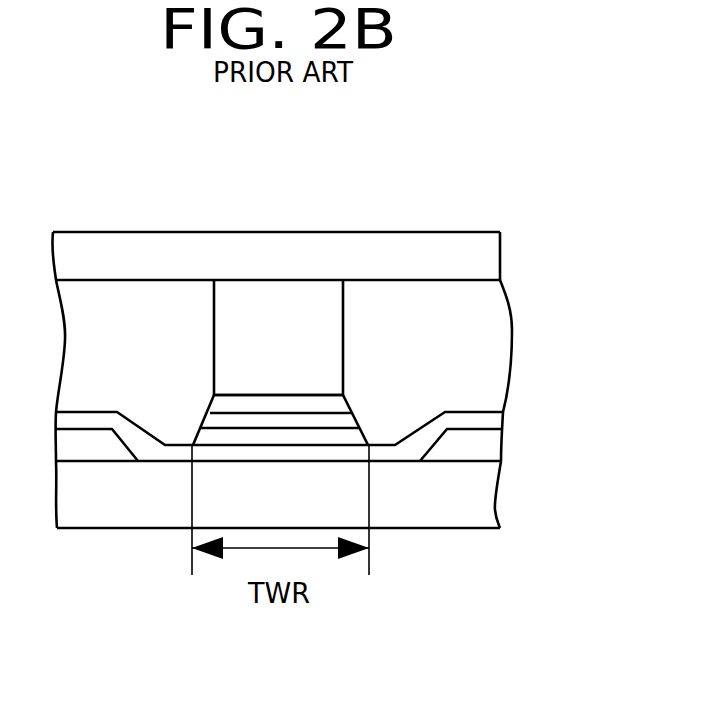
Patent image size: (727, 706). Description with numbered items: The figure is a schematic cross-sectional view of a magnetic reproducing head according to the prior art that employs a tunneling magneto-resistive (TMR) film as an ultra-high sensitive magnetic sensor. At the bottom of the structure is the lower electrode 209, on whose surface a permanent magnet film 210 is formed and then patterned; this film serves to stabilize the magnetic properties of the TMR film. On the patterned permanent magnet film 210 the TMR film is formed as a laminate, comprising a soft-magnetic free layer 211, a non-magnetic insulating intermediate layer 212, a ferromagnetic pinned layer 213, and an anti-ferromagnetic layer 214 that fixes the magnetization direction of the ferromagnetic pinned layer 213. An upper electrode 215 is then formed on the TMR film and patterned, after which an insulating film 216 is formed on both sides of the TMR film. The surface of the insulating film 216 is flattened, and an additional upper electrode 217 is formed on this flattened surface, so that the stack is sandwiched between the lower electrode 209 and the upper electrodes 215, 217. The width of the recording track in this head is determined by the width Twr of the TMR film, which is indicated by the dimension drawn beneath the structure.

The lower electrode 209 is at (485, 498).
The permanent magnet film 210 is at (483, 443).
The soft-magnetic free layer 211 is at (485, 423).
The non-magnetic insulating intermediate layer 212 is at (197, 432).
The ferromagnetic pinned layer 213 is at (358, 425).
The anti-ferromagnetic layer 214 is at (240, 405).
The upper electrode 215 is at (277, 297).
The insulating film 216 is at (443, 323).
The additional upper electrode 217 is at (173, 250).